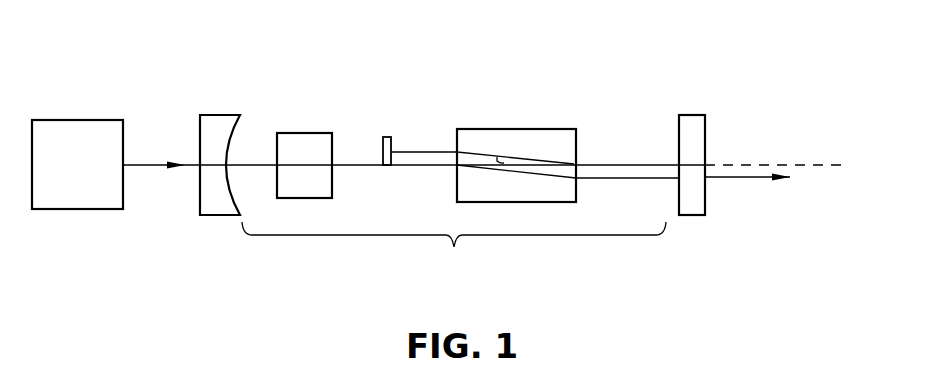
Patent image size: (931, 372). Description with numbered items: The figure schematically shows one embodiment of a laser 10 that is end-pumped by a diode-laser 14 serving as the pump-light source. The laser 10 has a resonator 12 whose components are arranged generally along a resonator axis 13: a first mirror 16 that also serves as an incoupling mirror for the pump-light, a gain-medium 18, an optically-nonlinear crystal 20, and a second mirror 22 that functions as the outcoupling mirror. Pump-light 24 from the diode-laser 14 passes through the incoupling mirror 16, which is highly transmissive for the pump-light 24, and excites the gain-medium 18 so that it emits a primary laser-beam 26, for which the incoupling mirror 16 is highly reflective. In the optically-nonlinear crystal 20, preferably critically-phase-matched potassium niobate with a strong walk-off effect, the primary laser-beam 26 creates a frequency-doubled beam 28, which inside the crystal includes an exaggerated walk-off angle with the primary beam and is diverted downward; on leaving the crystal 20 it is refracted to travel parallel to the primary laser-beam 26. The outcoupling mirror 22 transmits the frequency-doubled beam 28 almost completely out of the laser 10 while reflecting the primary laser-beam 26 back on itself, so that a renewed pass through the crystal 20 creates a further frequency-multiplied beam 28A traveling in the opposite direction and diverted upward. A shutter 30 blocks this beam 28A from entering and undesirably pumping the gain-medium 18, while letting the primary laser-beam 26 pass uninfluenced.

The laser 10 is at (163, 264).
The resonator 12 is at (475, 235).
The resonator axis 13 is at (818, 165).
The diode-laser 14 is at (75, 120).
The first mirror 16 is at (212, 115).
The gain-medium 18 is at (307, 133).
The optically-nonlinear crystal 20 is at (546, 129).
The second mirror 22 is at (693, 115).
The pump-light 24 is at (143, 165).
The primary laser-beam 26 is at (627, 165).
The frequency-doubled beam 28 is at (747, 175).
The further frequency-multiplied beam 28A is at (428, 150).
The shutter 30 is at (386, 137).